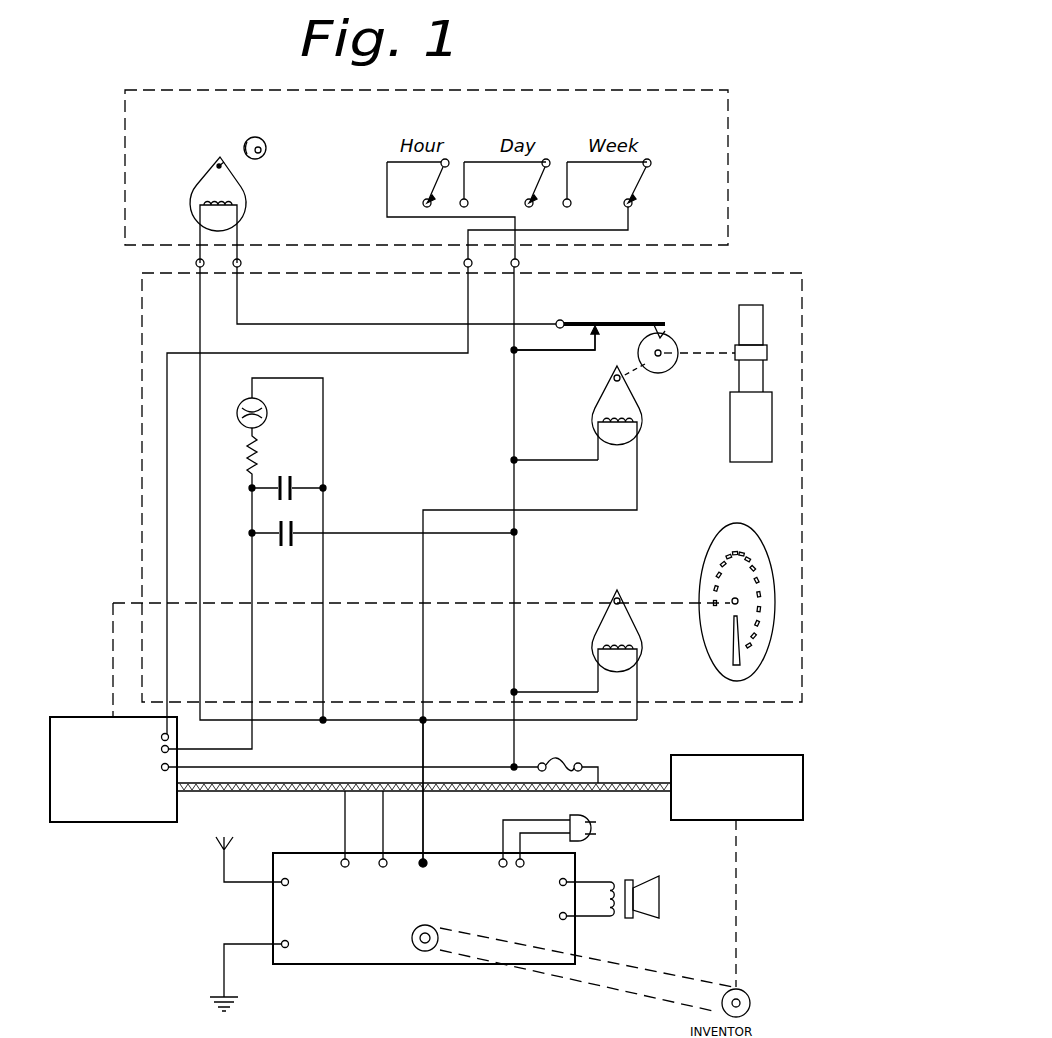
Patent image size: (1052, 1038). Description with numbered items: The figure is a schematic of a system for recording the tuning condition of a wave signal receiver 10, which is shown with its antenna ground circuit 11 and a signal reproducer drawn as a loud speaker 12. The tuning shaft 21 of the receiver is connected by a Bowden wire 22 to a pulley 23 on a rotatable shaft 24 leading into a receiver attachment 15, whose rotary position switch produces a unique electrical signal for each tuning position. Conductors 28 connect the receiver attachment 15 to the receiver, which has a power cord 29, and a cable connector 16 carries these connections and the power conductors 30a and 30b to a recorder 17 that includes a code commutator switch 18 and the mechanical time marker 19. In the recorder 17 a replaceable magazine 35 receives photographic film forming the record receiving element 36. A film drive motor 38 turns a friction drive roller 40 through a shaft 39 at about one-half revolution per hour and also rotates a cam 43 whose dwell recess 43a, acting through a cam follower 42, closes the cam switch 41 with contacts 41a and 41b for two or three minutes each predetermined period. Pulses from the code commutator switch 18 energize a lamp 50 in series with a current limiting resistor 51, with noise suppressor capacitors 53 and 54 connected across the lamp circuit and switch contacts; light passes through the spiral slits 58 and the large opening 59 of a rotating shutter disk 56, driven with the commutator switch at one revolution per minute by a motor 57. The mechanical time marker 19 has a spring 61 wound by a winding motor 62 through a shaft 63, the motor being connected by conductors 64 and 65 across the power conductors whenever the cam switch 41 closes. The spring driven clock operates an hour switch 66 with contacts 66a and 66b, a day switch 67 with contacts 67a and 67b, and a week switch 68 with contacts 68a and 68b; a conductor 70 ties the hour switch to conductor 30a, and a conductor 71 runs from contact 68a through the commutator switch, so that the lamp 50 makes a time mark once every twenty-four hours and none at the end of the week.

The wave signal receiver 10 is at (333, 956).
The antenna ground circuit 11 is at (226, 940).
The loud speaker 12 is at (662, 892).
The receiver attachment 15 is at (760, 755).
The cable connector 16 is at (302, 792).
The recorder 17 is at (141, 382).
The code commutator switch 18 is at (86, 697).
The mechanical time marker 19 is at (728, 172).
The tuning shaft 21 is at (424, 951).
The Bowden wire 22 is at (602, 996).
The pulley 23 is at (750, 1000).
The rotatable shaft 24 is at (742, 936).
The conductors 28 is at (346, 823).
The power cord 29 is at (546, 832).
The conductor 30a is at (608, 777).
The conductor 30b is at (421, 752).
The magazine 35 is at (729, 434).
The record receiving element 36 is at (763, 318).
The film drive motor 38 is at (606, 388).
The shaft 39 is at (688, 356).
The friction drive roller 40 is at (767, 352).
The cam switch 41 is at (589, 339).
The movable contact 41a is at (645, 322).
The movable contact 41b is at (588, 352).
The cam follower 42 is at (662, 335).
The cam 43 is at (664, 371).
The dwell portion or recess 43a is at (670, 345).
The lamp 50 is at (268, 405).
The current limiting resistor 51 is at (258, 450).
The capacitor 53 is at (283, 478).
The capacitor 54 is at (287, 548).
The rotating shutter disk 56 is at (712, 552).
The motor 57 is at (598, 622).
The slits 58 is at (712, 580).
The large opening 59 is at (730, 638).
The spring 61 is at (266, 143).
The winding motor 62 is at (200, 180).
The shaft 63 is at (220, 160).
The conductor 64 is at (199, 308).
The conductor 65 is at (240, 300).
The hour switch 66 is at (423, 181).
The contact 66a is at (423, 203).
The contact 66b is at (467, 201).
The day switch 67 is at (510, 181).
The contact 67a is at (525, 205).
The contact 67b is at (570, 200).
The week switch 68 is at (616, 181).
The contact 68a is at (624, 204).
The contact 68b is at (662, 200).
The conductor 70 is at (516, 292).
The conductor 71 is at (466, 290).